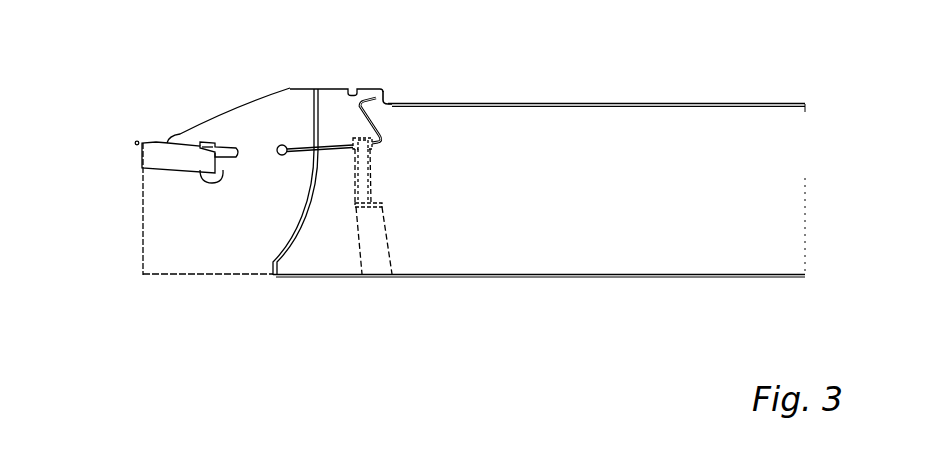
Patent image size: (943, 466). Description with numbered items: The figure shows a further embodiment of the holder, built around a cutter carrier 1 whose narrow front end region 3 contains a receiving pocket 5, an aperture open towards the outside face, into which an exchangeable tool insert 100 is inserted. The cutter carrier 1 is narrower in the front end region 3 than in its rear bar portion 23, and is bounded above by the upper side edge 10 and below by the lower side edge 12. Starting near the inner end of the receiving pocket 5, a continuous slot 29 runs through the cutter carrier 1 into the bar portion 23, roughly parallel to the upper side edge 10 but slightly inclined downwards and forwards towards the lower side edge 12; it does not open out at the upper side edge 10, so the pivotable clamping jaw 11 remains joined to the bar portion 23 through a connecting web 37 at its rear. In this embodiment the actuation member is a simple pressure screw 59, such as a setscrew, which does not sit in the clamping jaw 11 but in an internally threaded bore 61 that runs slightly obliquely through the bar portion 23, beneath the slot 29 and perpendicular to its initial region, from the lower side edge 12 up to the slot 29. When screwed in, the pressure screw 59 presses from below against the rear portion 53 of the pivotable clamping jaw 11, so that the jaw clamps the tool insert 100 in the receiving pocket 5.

The cutter carrier 1 is at (537, 143).
The front end region 3 is at (192, 263).
The receiving pocket 5 is at (127, 143).
The upper side edge 10 is at (675, 107).
The pivotable clamping jaw 11 is at (219, 125).
The lower side edge 12 is at (547, 278).
The bar portion 23 is at (627, 267).
The slot 29 is at (308, 145).
The connecting web 37 is at (367, 93).
The rear portion of the pivotable clamping jaw 53 is at (332, 110).
The pressure screw 59 is at (372, 185).
The bore 61 is at (357, 252).
The tool insert 100 is at (153, 158).